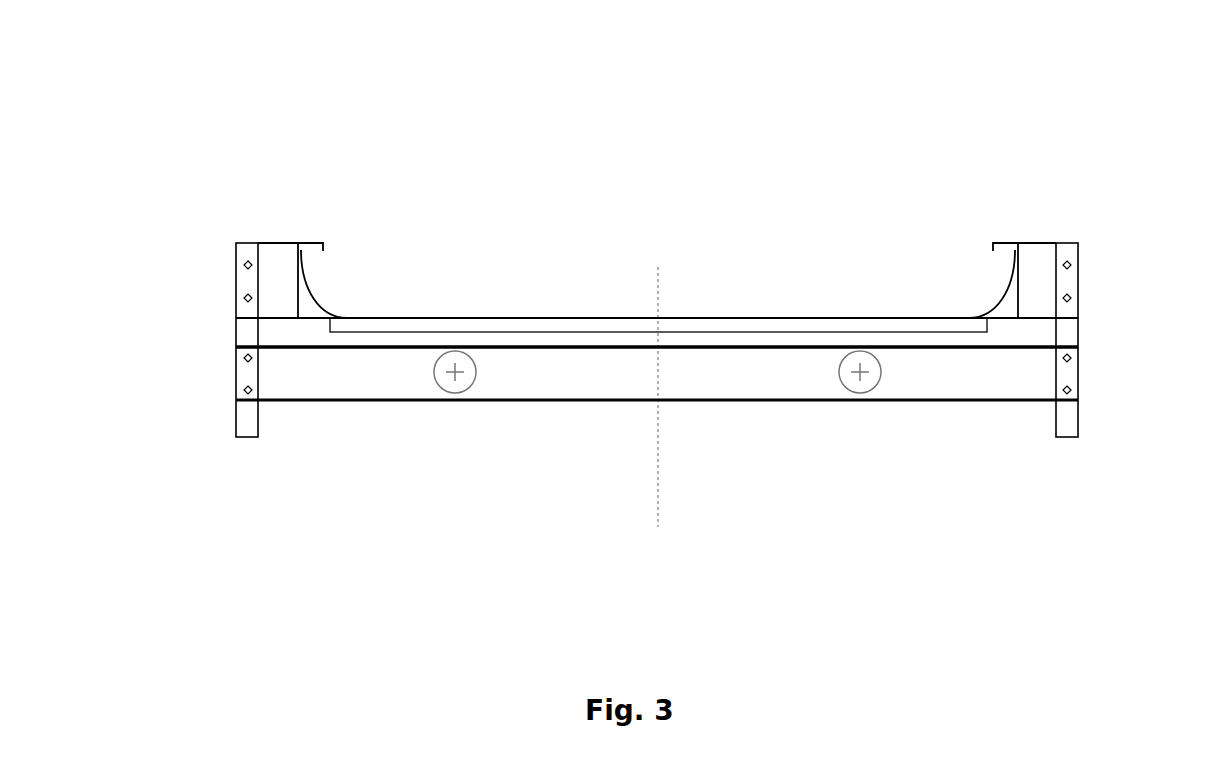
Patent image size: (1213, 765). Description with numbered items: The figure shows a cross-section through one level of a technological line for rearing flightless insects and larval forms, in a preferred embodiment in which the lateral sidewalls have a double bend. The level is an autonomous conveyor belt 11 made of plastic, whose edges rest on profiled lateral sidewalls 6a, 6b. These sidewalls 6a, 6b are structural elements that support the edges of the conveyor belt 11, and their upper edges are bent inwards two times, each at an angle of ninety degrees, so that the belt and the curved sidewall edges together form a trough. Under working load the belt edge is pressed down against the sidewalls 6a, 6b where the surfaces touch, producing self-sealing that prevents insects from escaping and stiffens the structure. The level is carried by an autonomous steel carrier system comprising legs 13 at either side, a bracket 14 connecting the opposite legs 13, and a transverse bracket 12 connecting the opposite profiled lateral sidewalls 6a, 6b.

The profiled lateral sidewall 6a is at (312, 243).
The profiled lateral sidewall 6b is at (1005, 243).
The conveyor belt 11 is at (573, 318).
The transverse bracket 12 is at (372, 330).
The leg 13 is at (236, 425).
The bracket 14 is at (545, 392).